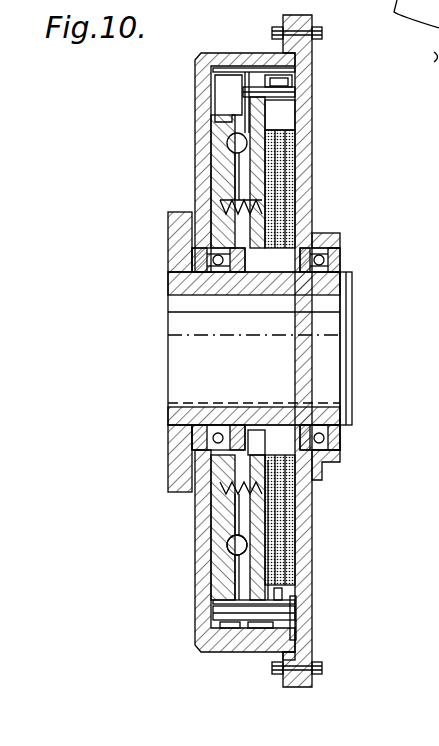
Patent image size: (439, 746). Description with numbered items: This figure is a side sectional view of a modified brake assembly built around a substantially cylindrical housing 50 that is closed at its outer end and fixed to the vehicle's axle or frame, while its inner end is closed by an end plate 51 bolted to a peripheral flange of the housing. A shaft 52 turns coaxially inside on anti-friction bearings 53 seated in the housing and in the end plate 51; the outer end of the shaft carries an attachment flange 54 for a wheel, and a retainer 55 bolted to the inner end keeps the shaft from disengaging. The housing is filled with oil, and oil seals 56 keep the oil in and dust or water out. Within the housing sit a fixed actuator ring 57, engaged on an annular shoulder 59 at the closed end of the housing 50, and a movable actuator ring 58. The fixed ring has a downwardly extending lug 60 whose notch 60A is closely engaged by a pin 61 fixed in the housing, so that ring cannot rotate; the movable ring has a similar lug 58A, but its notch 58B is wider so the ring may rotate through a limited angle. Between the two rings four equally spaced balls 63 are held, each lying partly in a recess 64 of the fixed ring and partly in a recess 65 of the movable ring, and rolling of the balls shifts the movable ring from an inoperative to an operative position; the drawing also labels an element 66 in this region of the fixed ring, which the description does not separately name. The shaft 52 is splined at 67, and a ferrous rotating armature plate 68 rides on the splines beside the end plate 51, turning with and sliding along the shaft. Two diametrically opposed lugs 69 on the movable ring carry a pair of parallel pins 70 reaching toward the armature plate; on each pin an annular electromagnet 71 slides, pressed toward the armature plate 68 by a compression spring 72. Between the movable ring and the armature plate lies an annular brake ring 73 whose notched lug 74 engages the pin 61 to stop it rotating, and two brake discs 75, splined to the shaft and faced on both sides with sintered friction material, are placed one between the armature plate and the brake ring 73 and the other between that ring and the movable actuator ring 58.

The housing 50 is at (204, 88).
The end plate 51 is at (304, 160).
The shaft 52 is at (325, 367).
The anti-friction bearings 53 is at (318, 466).
The attachment flange 54 is at (182, 248).
The retainer 55 is at (352, 298).
The oil seals 56 is at (200, 262).
The fixed actuator ring 57 is at (230, 130).
The movable actuator ring 58 is at (250, 528).
The lug 58A is at (260, 640).
The notch 58B is at (298, 618).
The annular shoulder 59 is at (170, 490).
The lug 60 is at (226, 640).
The notch 60A is at (215, 602).
The pin 61 is at (210, 620).
The balls 63 is at (227, 141).
The recess 64 is at (227, 560).
The recess 65 is at (257, 560).
The spring 66 is at (222, 198).
The splines 67 is at (258, 432).
The rotating armature plate 68 is at (296, 197).
The lugs 69 is at (247, 72).
The pins 70 is at (296, 95).
The annular electromagnet 71 is at (284, 88).
The compression spring 72 is at (272, 75).
The annular brake ring 73 is at (282, 596).
The lug 74 is at (290, 648).
The brake discs 75 is at (270, 492).